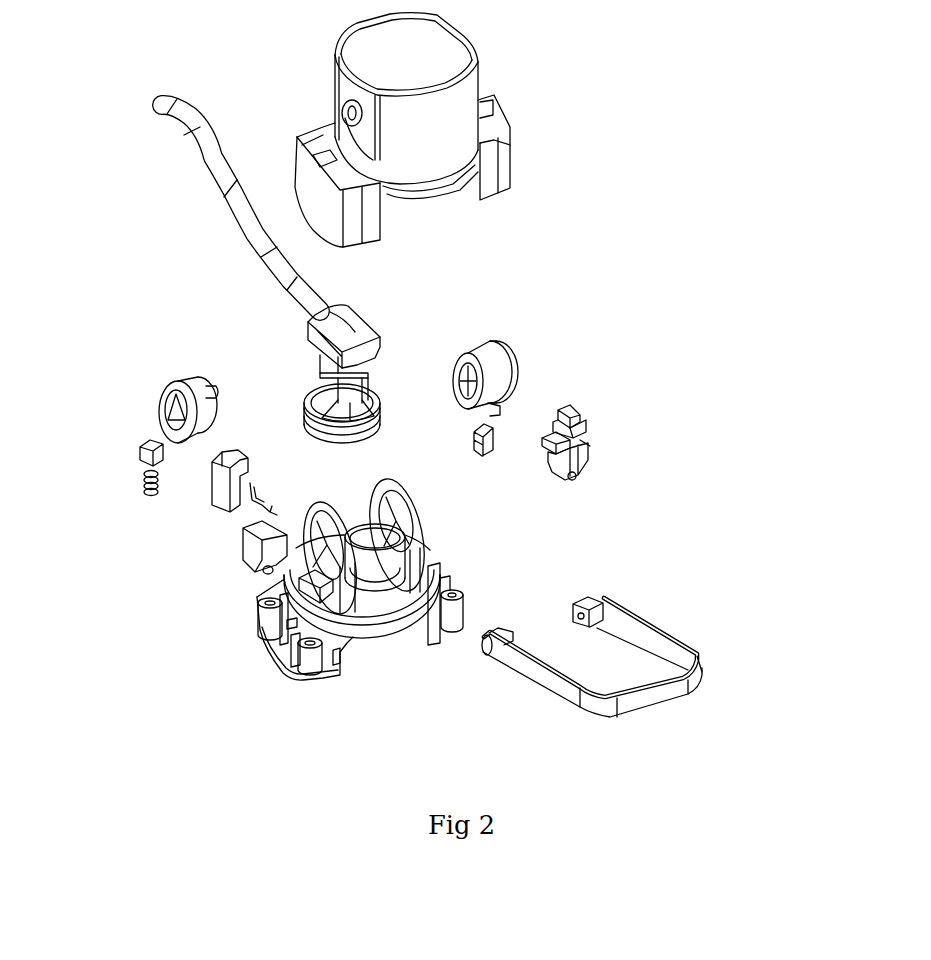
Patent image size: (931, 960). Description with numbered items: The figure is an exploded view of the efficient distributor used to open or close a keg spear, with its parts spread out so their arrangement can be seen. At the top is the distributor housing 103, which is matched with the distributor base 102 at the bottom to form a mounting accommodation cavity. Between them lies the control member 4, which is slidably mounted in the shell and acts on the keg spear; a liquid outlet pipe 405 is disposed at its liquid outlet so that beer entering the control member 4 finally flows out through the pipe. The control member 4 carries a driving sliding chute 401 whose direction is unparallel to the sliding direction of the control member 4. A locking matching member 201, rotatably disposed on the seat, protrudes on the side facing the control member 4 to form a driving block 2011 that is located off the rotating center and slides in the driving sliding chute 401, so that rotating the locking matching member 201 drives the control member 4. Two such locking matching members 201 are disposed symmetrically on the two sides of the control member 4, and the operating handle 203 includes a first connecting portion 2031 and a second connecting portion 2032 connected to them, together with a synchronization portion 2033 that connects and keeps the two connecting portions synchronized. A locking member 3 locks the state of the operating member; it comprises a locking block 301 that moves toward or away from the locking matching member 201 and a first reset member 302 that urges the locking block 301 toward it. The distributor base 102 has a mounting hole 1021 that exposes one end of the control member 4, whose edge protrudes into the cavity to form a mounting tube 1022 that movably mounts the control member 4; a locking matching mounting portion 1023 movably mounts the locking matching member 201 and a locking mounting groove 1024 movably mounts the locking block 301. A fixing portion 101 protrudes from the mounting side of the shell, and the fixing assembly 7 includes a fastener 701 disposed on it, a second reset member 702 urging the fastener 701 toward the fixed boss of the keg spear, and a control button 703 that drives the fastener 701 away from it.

The distributor housing 103 is at (447, 113).
The liquid outlet pipe 405 is at (205, 150).
The driving sliding chute 401 is at (305, 335).
The control member 4 is at (378, 378).
The locking matching member 201 is at (488, 378).
The driving block 2011 is at (204, 383).
The locking member 3 is at (490, 427).
The fixing assembly 7 is at (590, 446).
The locking block 301 is at (148, 450).
The first reset member 302 is at (150, 487).
The control button 703 is at (215, 480).
The second reset member 702 is at (252, 503).
The fastener 701 is at (245, 555).
The fixing portion 101 is at (337, 653).
The distributor base 102 is at (277, 650).
The mounting hole 1021 is at (366, 571).
The mounting tube 1022 is at (368, 597).
The locking matching mounting portion 1023 is at (430, 546).
The locking mounting groove 1024 is at (307, 590).
The operating handle 203 is at (674, 607).
The first connecting portion 2031 is at (611, 603).
The second connecting portion 2032 is at (630, 625).
The synchronization portion 2033 is at (655, 690).